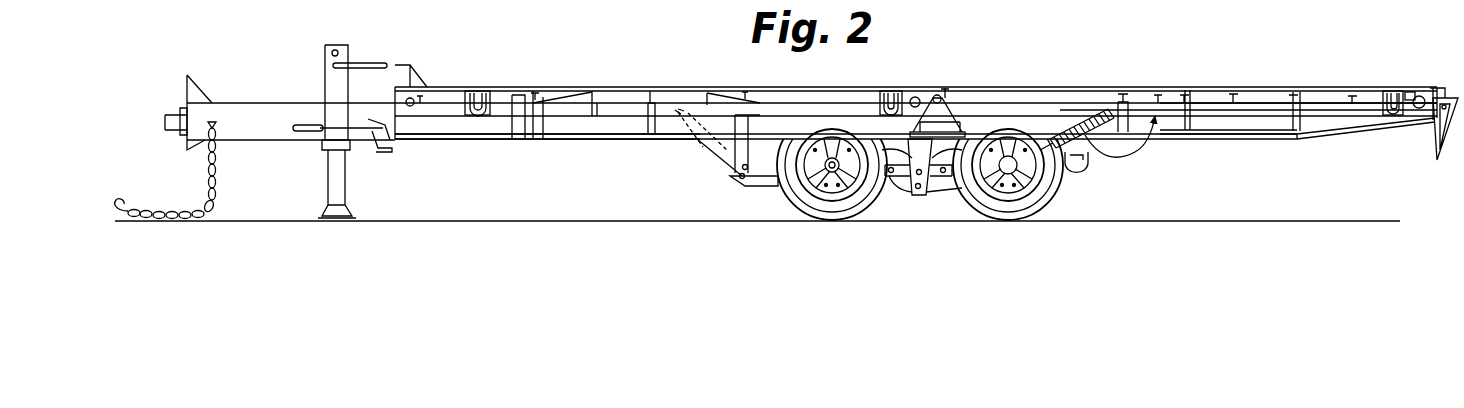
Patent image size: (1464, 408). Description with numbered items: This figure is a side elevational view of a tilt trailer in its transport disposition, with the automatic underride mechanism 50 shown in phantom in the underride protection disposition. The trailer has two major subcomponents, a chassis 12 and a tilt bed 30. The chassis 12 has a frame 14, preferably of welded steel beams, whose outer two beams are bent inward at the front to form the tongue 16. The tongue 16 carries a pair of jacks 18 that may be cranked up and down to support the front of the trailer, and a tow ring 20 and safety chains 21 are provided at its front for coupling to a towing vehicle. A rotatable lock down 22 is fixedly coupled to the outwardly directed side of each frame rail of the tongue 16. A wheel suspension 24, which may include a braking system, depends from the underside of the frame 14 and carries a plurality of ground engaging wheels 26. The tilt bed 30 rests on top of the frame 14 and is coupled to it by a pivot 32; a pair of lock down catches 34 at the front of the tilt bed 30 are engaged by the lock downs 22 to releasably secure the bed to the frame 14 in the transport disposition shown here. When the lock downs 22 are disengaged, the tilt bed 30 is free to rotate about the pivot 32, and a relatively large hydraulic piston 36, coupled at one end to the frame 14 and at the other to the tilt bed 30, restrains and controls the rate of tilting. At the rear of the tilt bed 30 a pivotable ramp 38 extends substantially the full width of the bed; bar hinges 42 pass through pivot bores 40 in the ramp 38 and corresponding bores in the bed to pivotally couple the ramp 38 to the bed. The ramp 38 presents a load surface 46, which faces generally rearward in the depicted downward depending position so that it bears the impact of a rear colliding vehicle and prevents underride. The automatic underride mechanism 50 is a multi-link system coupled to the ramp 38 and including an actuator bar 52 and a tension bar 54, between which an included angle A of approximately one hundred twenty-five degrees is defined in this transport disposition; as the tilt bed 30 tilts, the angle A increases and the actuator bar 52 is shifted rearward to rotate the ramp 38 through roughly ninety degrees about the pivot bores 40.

The chassis 12 is at (450, 139).
The frame 14 is at (547, 139).
The tongue 16 is at (262, 103).
The jacks 18 is at (323, 50).
The tow ring 20 is at (163, 112).
The safety chains 21 is at (190, 208).
The rotatable lock down 22 is at (313, 125).
The wheel suspension 24 is at (915, 180).
The ground engaging wheels 26 is at (808, 203).
The tilt bed 30 is at (523, 87).
The pivot 32 is at (935, 100).
The lock down catches 34 is at (370, 100).
The hydraulic piston 36 is at (720, 152).
The pivotable ramp 38 is at (1433, 145).
The pivot bores 40 is at (1432, 90).
The bar hinges 42 is at (1438, 95).
The load surface 46 is at (1440, 150).
The automatic underride mechanism 50 is at (1233, 108).
The actuator bar 52 is at (1210, 112).
The tension bar 54 is at (1080, 115).
The included angle A is at (1125, 150).